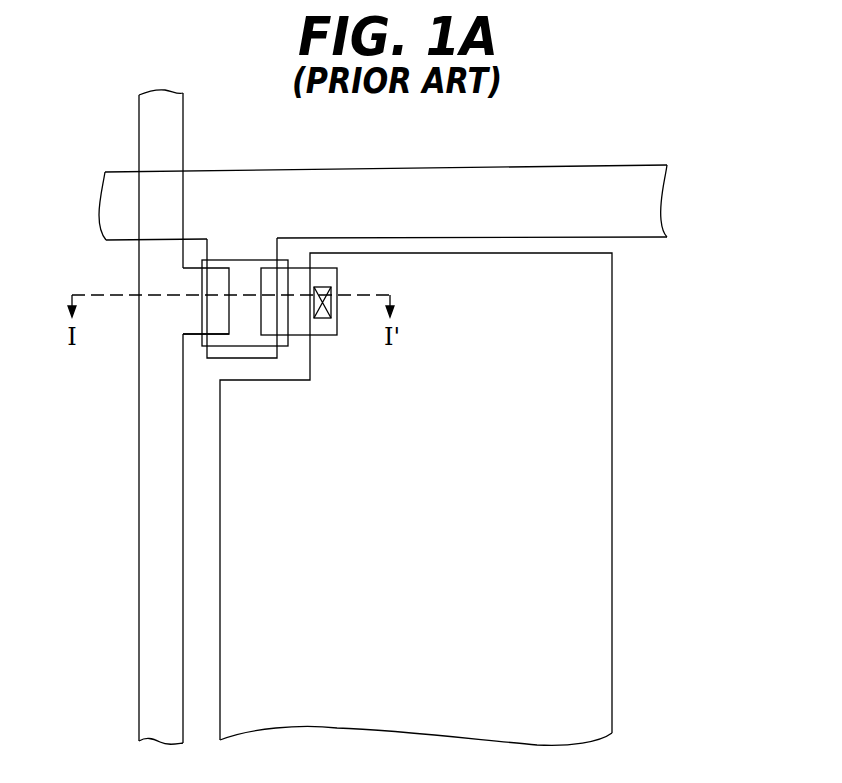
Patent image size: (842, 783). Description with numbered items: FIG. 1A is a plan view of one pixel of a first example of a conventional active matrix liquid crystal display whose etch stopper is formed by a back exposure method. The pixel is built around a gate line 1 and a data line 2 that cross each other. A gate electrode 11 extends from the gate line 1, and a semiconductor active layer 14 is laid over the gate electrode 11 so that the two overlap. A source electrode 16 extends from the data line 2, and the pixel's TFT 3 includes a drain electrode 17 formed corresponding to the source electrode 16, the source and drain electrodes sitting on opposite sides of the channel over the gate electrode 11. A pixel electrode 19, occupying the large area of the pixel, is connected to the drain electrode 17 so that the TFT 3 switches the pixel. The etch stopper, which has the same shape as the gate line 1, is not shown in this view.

The gate line 1 is at (658, 189).
The data line 2 is at (157, 467).
The TFT 3 is at (246, 224).
The gate electrode 11 is at (233, 348).
The semiconductor active layer 14 is at (237, 336).
The source electrode 16 is at (203, 322).
The drain electrode 17 is at (271, 320).
The pixel electrode 19 is at (597, 370).